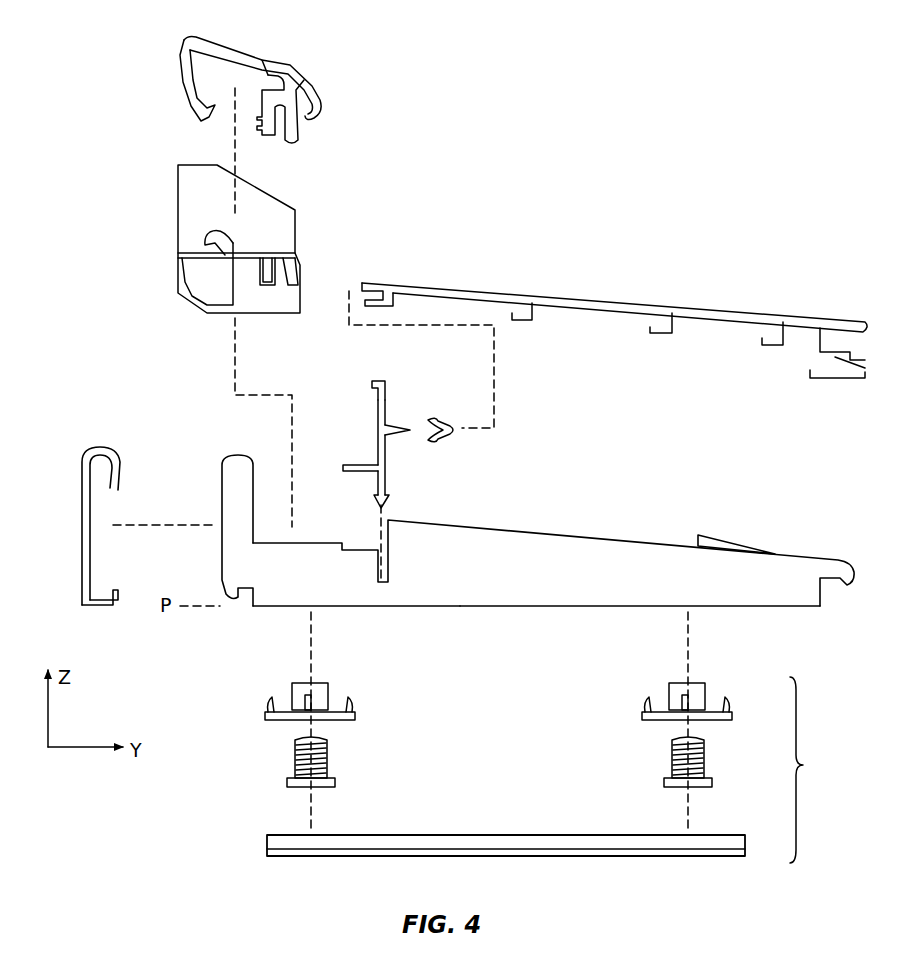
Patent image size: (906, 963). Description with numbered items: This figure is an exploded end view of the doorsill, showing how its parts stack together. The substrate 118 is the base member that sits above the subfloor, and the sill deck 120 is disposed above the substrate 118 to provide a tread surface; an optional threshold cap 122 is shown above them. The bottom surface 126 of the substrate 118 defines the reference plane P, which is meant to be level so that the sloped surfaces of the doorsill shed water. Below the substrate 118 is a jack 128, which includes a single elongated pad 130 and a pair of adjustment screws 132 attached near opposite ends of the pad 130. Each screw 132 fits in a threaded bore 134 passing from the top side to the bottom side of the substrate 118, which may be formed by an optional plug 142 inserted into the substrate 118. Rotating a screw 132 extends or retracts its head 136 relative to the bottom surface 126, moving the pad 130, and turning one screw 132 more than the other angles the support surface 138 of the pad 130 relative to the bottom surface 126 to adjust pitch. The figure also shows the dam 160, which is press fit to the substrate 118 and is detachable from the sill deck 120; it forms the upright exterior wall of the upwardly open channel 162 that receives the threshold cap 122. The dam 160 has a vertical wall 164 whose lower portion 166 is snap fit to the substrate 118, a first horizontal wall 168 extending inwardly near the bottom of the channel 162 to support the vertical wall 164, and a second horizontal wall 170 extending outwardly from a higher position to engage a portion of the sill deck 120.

The substrate 118 is at (471, 519).
The sill deck 120 is at (690, 300).
The threshold cap 122 is at (225, 50).
The bottom surface 126 is at (465, 608).
The jack 128 is at (528, 772).
The pad 130 is at (511, 870).
The adjustment screw 132 is at (296, 755).
The threaded bore 134 is at (492, 679).
The head 136 is at (332, 785).
The support surface 138 is at (330, 856).
The plug 142 is at (300, 695).
The dam 160 is at (383, 447).
The upwardly open channel 162 is at (262, 455).
The vertical wall 164 is at (378, 402).
The lower portion 166 is at (390, 490).
The first horizontal wall 168 is at (352, 473).
The second horizontal wall 170 is at (398, 427).